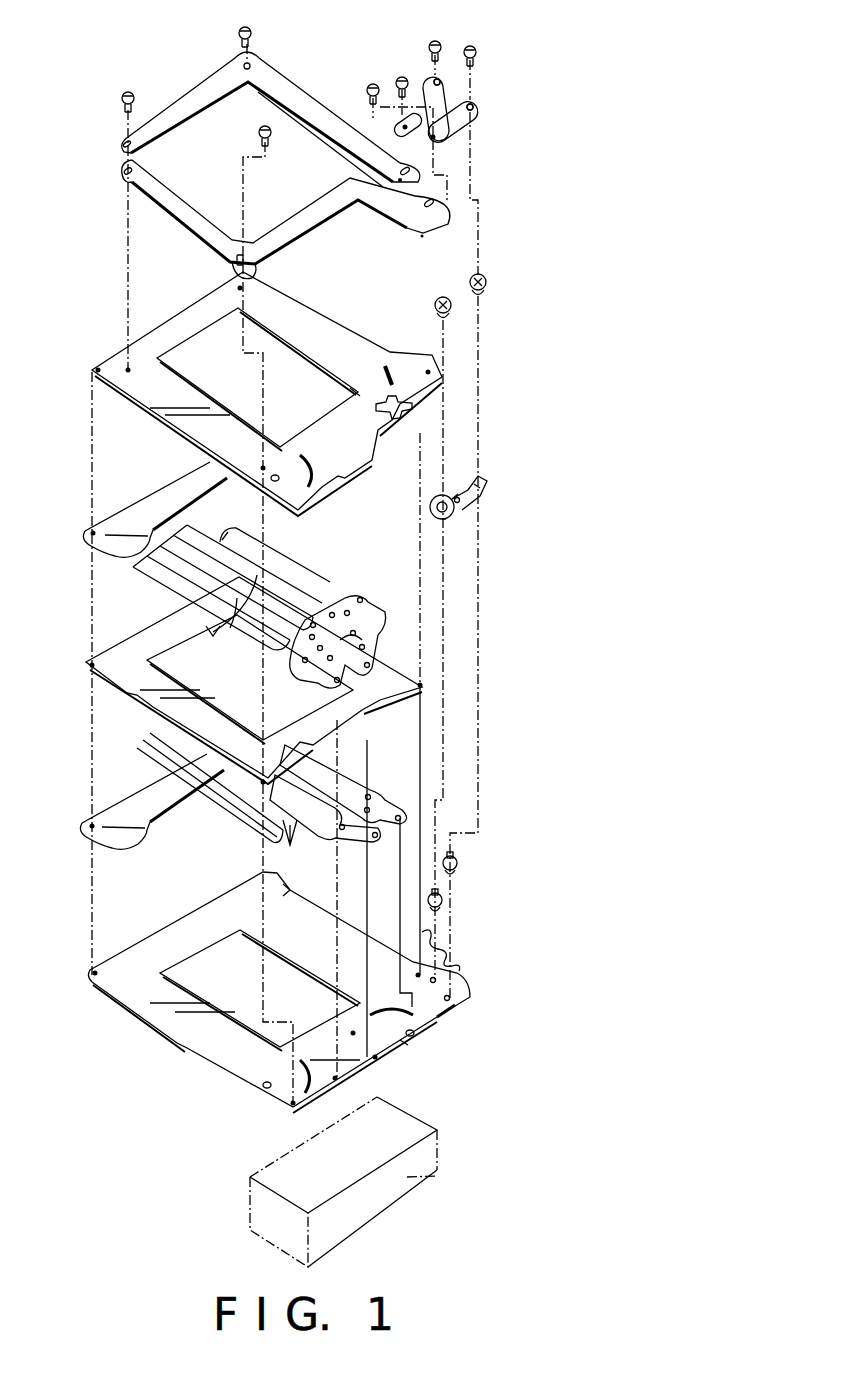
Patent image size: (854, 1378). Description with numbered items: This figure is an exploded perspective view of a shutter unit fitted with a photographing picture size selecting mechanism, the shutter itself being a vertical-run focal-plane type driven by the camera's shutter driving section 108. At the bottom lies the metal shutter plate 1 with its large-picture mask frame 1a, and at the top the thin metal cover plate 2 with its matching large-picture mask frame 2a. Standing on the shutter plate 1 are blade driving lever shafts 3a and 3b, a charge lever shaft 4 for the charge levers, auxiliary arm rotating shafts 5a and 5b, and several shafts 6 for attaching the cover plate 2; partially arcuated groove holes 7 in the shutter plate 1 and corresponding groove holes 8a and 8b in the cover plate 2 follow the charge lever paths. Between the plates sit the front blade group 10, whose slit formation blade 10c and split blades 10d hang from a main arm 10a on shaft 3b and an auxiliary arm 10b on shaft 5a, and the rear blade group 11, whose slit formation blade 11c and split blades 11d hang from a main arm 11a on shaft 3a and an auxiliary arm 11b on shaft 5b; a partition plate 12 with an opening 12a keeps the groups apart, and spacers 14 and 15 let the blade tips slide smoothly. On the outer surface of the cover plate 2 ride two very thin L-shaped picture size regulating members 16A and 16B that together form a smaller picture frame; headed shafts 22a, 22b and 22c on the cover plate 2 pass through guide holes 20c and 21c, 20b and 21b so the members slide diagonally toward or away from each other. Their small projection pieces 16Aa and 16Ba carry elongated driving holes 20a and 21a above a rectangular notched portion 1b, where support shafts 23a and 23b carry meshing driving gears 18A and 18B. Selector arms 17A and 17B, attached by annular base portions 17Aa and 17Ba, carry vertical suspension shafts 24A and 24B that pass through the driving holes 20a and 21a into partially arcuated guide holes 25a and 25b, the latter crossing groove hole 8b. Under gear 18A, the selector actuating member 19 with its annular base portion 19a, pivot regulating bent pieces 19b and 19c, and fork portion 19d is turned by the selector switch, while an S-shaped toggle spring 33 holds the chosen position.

The shutter plate 1 is at (299, 1023).
The large-picture mask frame 1a is at (215, 1040).
The notched portion 1b is at (440, 1020).
The cover plate 2 is at (267, 404).
The large-picture mask frame 2a is at (183, 335).
The blade driving lever shaft 3a is at (412, 1040).
The blade driving lever shaft 3b is at (335, 1082).
The charge lever shaft 4 is at (350, 1030).
The auxiliary arm rotating shaft 5a is at (310, 1080).
The auxiliary arm rotating shaft 5b is at (405, 1045).
The shafts 6 is at (422, 757).
The partially arcuated groove holes 7 is at (415, 1015).
The partially arcuated groove hole 8a is at (315, 480).
The partially arcuated groove hole 8b is at (390, 423).
The front blade group 10 is at (274, 597).
The main arm 10a is at (315, 660).
The auxiliary arm 10b is at (370, 640).
The slit formation blade 10c is at (245, 535).
The split blades 10d is at (224, 623).
The rear blade group 11 is at (277, 808).
The main arm 11a is at (392, 805).
The auxiliary arm 11b is at (293, 890).
The slit formation blade 11c is at (230, 800).
The split blades 11d is at (300, 846).
The partition plate 12 is at (276, 681).
The opening 12a is at (170, 673).
The spacer 14 is at (125, 535).
The spacer 15 is at (125, 815).
The picture size regulating member 16A is at (292, 128).
The small projection piece 16Aa is at (420, 178).
The picture size regulating member 16B is at (294, 225).
The small projection piece 16Ba is at (447, 220).
The selector arm 17A is at (425, 78).
The annular base portion 17Aa is at (445, 75).
The selector arm 17B is at (472, 128).
The annular base portion 17Ba is at (482, 103).
The driving gear 18A is at (433, 305).
The driving gear 18B is at (490, 285).
The selector actuating member 19 is at (493, 477).
The annular base portion 19a is at (455, 518).
The pivot regulating bent piece 19b is at (450, 490).
The pivot regulating bent piece 19c is at (470, 500).
The fork portion 19d is at (482, 480).
The elongated driving hole 20a is at (380, 200).
The elongated guide hole 20b is at (258, 60).
The elongated guide hole 20c is at (118, 146).
The elongated driving hole 21a is at (422, 236).
The guide hole 21b is at (256, 266).
The guide hole 21c is at (125, 176).
The headed shaft 22a is at (120, 97).
The headed shaft 22b is at (252, 200).
The headed shaft 22c is at (245, 100).
The support shaft 23a is at (450, 903).
The support shaft 23b is at (460, 863).
The vertical suspension shaft 24A is at (372, 112).
The vertical suspension shaft 24B is at (390, 85).
The partially arcuated guide hole 25a is at (388, 364).
The partially arcuated guide hole 25b is at (357, 393).
The toggle spring 33 is at (448, 955).
The shutter driving section 108 is at (437, 1176).